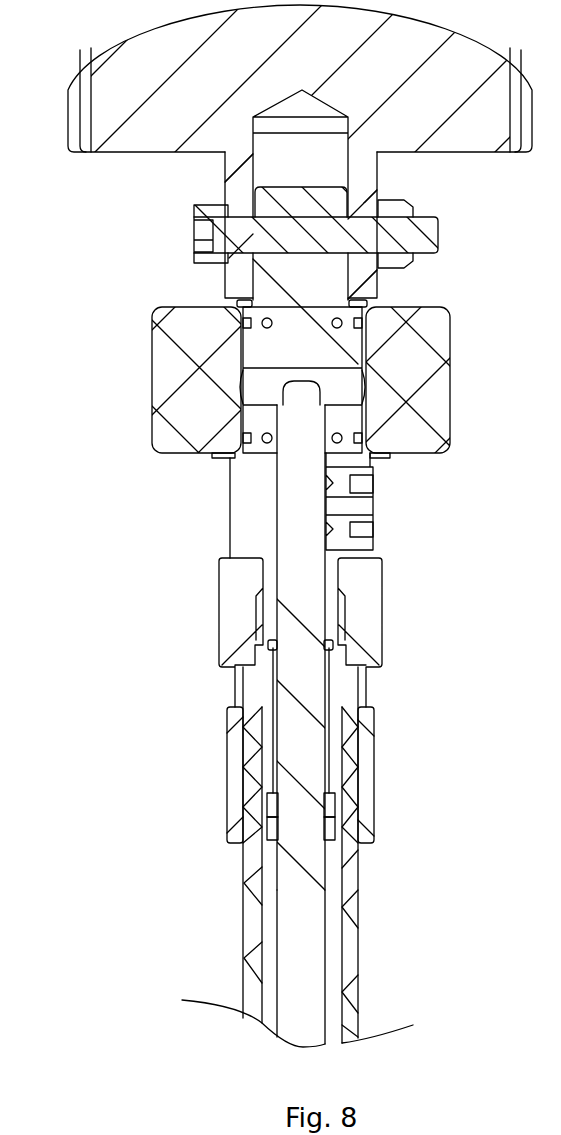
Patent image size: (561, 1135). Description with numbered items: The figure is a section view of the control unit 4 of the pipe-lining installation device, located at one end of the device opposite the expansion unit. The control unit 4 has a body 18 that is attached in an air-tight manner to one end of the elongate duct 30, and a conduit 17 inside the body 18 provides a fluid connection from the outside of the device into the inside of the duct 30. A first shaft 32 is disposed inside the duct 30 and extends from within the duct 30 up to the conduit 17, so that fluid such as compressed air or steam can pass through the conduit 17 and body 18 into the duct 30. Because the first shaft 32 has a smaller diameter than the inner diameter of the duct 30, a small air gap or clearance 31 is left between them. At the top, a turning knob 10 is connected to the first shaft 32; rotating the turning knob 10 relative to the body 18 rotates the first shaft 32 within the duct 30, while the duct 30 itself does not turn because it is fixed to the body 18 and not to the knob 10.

The control unit 4 is at (453, 551).
The turning knob 10 is at (460, 152).
The conduit 17 is at (265, 397).
The body 18 is at (450, 427).
The duct 30 is at (345, 898).
The clearance 31 is at (273, 950).
The first shaft 32 is at (312, 988).